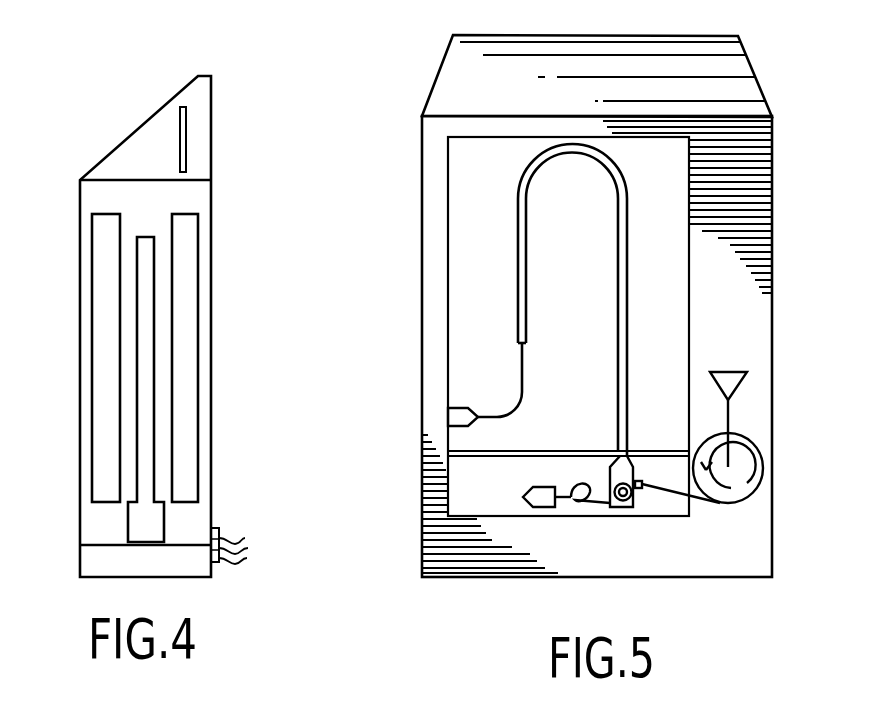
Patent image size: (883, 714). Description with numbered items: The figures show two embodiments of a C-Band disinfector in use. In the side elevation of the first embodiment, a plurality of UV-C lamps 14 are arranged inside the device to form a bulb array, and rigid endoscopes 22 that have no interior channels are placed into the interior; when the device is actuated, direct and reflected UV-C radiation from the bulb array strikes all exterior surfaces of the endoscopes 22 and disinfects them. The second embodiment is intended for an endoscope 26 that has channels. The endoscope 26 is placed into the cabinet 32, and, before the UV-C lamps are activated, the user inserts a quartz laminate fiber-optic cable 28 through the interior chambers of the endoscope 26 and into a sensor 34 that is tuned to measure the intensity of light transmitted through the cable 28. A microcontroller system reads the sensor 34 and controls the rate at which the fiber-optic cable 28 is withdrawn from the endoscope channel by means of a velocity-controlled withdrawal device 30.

In FIG. 4, the UV-C lamps 14 is at (183, 298).
In FIG. 4, the endoscopes 22 is at (148, 242).
In FIG. 5, the endoscope 26 is at (623, 277).
In FIG. 5, the quartz laminate fiber-optic cable 28 is at (522, 367).
In FIG. 5, the velocity-controlled withdrawal device 30 is at (747, 490).
In FIG. 5, the cabinet 32 is at (762, 312).
In FIG. 5, the sensor 34 is at (460, 412).